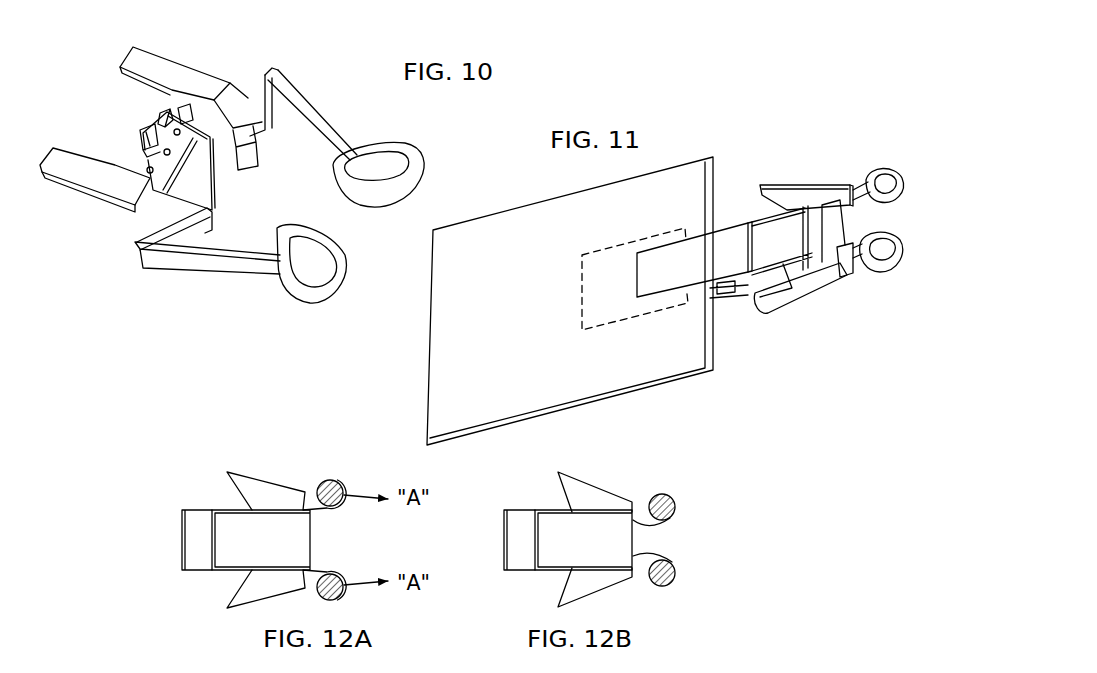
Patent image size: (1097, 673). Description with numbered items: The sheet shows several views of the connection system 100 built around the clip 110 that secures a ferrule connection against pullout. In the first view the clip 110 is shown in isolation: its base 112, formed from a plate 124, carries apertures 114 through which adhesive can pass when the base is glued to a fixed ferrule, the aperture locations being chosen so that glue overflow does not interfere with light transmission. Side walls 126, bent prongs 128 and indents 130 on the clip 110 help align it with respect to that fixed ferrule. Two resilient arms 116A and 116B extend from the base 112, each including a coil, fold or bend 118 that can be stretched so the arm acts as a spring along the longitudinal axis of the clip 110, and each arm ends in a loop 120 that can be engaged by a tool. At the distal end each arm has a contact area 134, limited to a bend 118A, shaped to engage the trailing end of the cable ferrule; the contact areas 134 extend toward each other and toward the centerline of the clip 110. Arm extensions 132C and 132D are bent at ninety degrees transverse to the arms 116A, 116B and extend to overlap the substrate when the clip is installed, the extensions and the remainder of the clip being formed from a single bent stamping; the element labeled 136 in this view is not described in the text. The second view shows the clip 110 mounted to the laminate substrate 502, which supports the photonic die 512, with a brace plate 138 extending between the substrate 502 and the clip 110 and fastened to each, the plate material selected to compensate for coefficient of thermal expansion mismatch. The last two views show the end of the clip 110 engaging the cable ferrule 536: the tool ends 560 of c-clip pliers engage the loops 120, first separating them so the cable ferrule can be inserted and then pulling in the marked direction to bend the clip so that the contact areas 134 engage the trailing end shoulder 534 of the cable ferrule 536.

In FIG. 11, the connection system 100 is at (736, 122).
In FIG. 11, the clip 110 is at (789, 320).
In FIG. 12B, the clip 110 is at (612, 482).
In FIG. 10, the base 112 is at (152, 107).
In FIG. 10, the apertures 114 is at (168, 158).
In FIG. 11, the resilient arm 116A is at (811, 185).
In FIG. 12A, the resilient arm 116A is at (249, 472).
In FIG. 12A, the resilient arm 116B is at (240, 585).
In FIG. 10, the bend 118 is at (275, 71).
In FIG. 10, the bend 118A is at (274, 225).
In FIG. 11, the loop 120 is at (880, 278).
In FIG. 12B, the loop 120 is at (680, 506).
In FIG. 10, the plate 124 is at (165, 133).
In FIG. 10, the side walls 126 is at (208, 117).
In FIG. 10, the bent prongs 128 is at (139, 135).
In FIG. 10, the indents 130 is at (206, 124).
In FIG. 10, the arm extension 132C is at (72, 176).
In FIG. 10, the arm extension 132D is at (168, 62).
In FIG. 10, the contact area 134 is at (270, 241).
In FIG. 11, the contact area 134 is at (845, 250).
In FIG. 10, the retaining loop 136 is at (263, 165).
In FIG. 11, the brace plate 138 is at (725, 242).
In FIG. 11, the laminate substrate 502 is at (538, 305).
In FIG. 11, the photonic die 512 is at (673, 298).
In FIG. 12B, the trailing end shoulder 534 is at (640, 548).
In FIG. 12A, the cable ferrule 536 is at (275, 548).
In FIG. 12A, the tool ends 560 is at (320, 487).
In FIG. 12B, the tool ends 560 is at (668, 588).